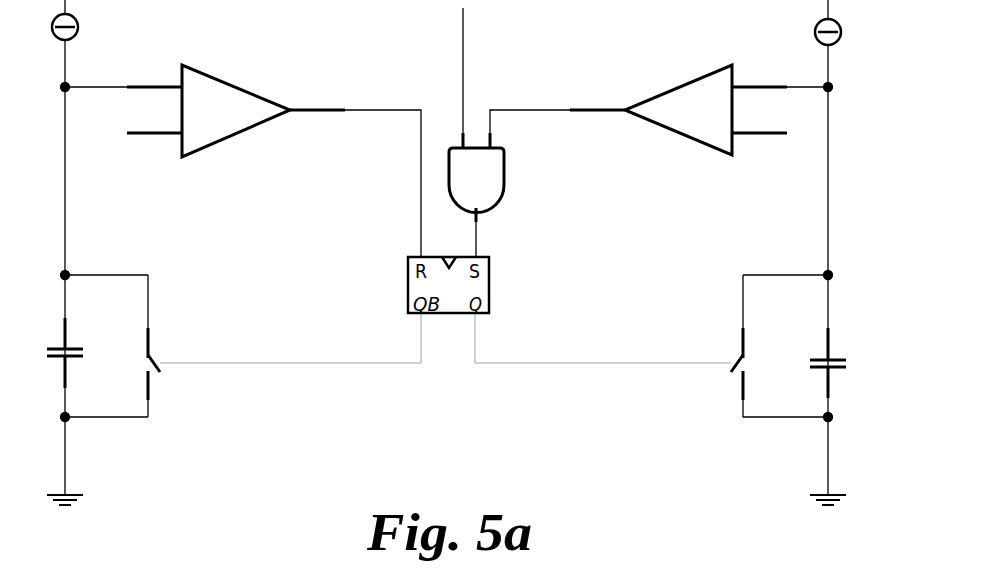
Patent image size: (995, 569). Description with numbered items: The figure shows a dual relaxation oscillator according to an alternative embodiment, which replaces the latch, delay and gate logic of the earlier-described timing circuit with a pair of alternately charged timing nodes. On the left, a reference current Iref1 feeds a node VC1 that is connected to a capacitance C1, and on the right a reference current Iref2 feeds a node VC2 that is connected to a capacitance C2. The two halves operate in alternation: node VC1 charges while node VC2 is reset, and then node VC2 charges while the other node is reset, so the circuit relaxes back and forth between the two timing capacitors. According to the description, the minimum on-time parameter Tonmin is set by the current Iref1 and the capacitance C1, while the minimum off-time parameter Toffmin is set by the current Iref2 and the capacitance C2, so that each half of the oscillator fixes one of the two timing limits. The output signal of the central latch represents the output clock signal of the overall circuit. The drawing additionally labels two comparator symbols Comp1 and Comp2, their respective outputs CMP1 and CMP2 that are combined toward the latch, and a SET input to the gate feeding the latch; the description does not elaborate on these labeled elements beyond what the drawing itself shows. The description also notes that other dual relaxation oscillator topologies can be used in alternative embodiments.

The current Iref1 is at (90, 27).
The current Iref2 is at (852, 32).
The capacitance C1 is at (83, 353).
The capacitance C2 is at (846, 363).
The first comparator Comp1 is at (236, 124).
The second comparator Comp2 is at (678, 124).
The first comparator output signal CMP1 is at (372, 169).
The second comparator output signal CMP2 is at (530, 114).
The set signal input SET is at (440, 78).
The node VC1 is at (106, 263).
The node VC2 is at (785, 263).